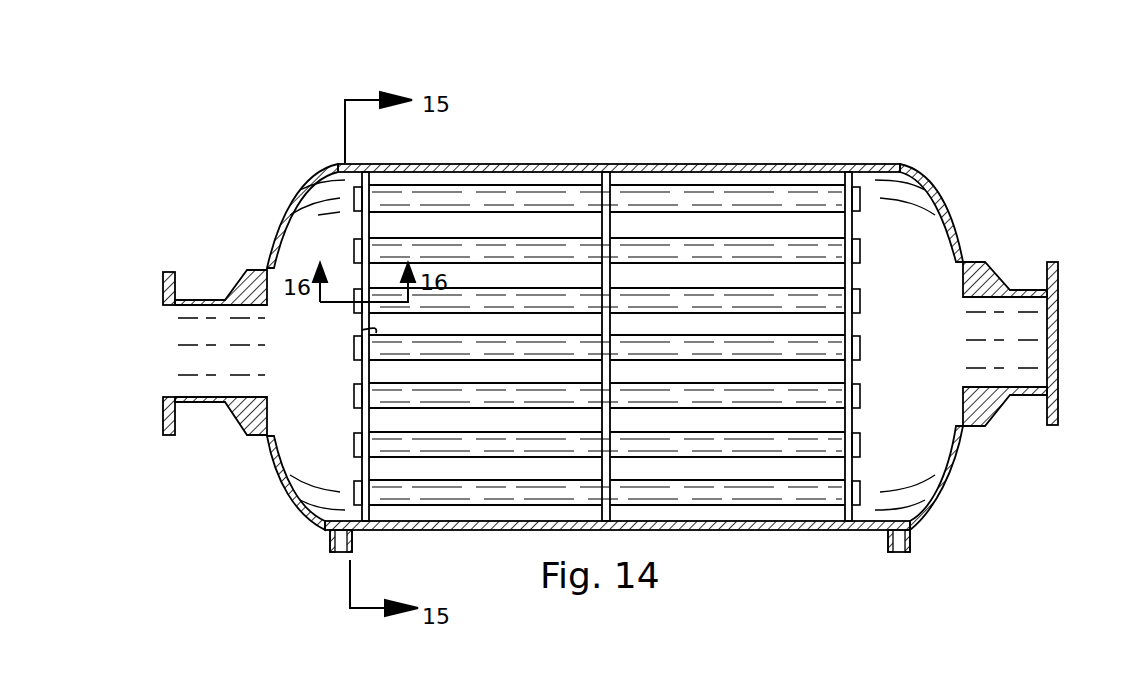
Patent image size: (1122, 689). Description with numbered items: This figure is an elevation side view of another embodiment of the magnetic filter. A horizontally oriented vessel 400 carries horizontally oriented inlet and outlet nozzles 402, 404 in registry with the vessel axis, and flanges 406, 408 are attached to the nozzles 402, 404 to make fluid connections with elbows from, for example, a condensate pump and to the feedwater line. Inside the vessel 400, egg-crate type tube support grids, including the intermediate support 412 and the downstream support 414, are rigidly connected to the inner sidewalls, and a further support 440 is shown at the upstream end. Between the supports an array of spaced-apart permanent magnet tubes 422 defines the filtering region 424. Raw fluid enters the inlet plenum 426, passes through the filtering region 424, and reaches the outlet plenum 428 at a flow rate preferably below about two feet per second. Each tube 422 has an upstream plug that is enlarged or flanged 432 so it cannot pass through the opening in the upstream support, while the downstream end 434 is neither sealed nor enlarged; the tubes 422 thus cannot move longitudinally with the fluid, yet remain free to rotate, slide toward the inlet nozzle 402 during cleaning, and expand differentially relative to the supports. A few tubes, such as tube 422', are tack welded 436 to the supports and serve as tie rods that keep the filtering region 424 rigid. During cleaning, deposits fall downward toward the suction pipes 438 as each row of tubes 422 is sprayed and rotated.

The vessel 400 is at (668, 80).
The inlet nozzle 402 is at (257, 266).
The outlet nozzle 404 is at (980, 262).
The inlet flange 406 is at (170, 272).
The outlet flange 408 is at (1055, 262).
The tube support grid 412 is at (612, 186).
The downstream tube support grid 414 is at (847, 172).
The permanent magnet tubes 422 is at (607, 168).
The tack-welded tube 422' is at (574, 370).
The filtering region 424 is at (574, 296).
The inlet plenum 426 is at (312, 351).
The outlet plenum 428 is at (940, 330).
The enlarged flanged plug end 432 is at (354, 245).
The downstream end 434 is at (862, 241).
The tack weld 436 is at (362, 330).
The suction pipes 438 is at (329, 548).
The left tube sheet 440 is at (365, 172).